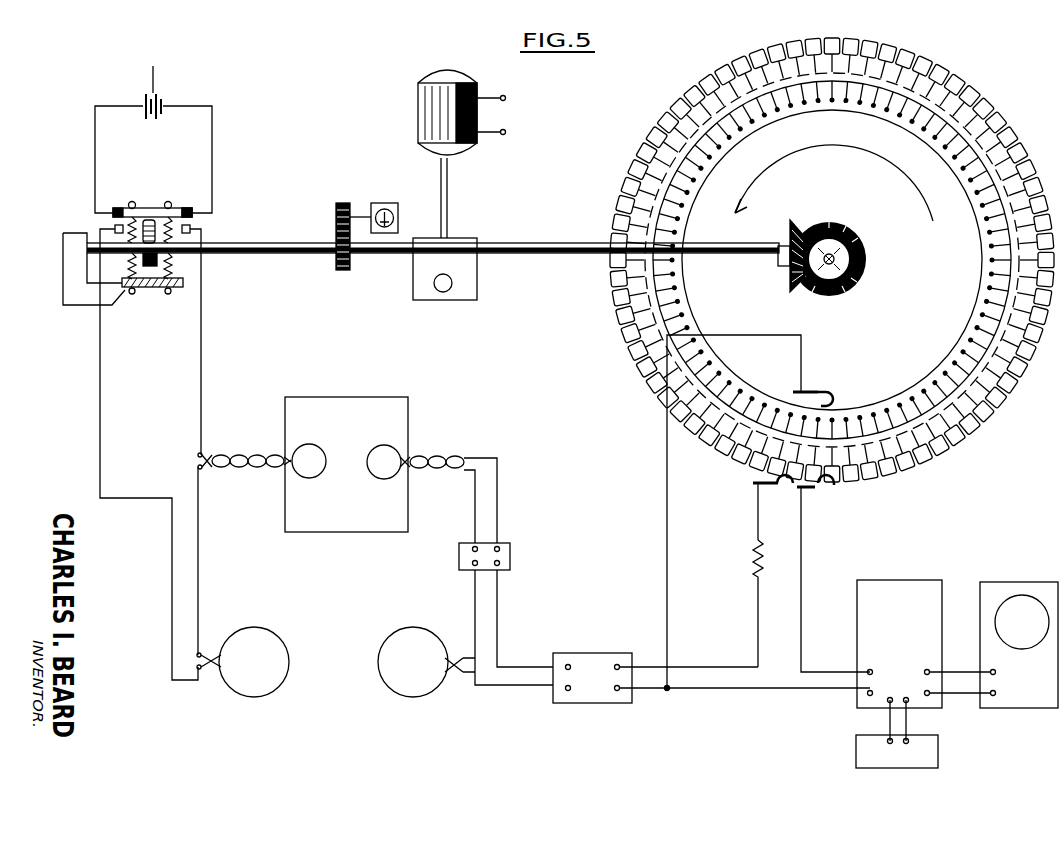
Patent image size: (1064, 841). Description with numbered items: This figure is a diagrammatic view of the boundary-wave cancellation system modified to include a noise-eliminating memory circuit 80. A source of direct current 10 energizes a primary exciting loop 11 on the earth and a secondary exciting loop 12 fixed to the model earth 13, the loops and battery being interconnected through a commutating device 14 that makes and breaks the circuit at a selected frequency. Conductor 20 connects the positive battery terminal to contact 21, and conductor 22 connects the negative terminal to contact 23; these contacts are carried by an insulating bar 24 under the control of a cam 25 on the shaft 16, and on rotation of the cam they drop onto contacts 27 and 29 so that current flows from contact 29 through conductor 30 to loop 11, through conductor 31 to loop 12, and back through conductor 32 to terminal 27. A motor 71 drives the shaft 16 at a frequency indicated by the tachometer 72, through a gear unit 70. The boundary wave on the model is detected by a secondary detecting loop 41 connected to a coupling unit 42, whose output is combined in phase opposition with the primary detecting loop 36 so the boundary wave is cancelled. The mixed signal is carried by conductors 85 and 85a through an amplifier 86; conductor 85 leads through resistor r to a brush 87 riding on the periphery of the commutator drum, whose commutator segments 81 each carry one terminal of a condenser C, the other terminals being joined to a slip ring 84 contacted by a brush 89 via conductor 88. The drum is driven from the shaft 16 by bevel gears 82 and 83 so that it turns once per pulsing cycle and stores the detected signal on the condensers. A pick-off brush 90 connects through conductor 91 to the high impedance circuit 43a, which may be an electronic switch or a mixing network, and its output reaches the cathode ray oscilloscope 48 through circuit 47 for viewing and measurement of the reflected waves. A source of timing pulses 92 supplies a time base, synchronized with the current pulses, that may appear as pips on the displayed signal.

The source of direct current 10 is at (147, 81).
The primary exciting loop 11 is at (273, 668).
The secondary exciting loop 12 is at (304, 476).
The model earth 13 is at (359, 422).
The commutating device 14 is at (32, 194).
The shaft 16 is at (381, 258).
The conductor 20 is at (213, 150).
The contact 21 is at (195, 214).
The conductor 22 is at (97, 152).
The contact 23 is at (113, 213).
The insulating bar 24 is at (147, 216).
The cam 25 is at (158, 258).
The contact 27 is at (191, 230).
The contact 29 is at (114, 229).
The conductor 30 is at (100, 374).
The conductor 31 is at (200, 545).
The conductor 32 is at (201, 345).
The primary detecting loop 36 is at (380, 673).
The secondary detecting loop 41 is at (380, 478).
The coupling unit 42 is at (505, 549).
The circuit 43a is at (898, 592).
The circuit 47 is at (950, 684).
The cathode ray oscilloscope 48 is at (1006, 587).
The gear box 70 is at (456, 246).
The motor 71 is at (426, 119).
The tachometer 72 is at (385, 206).
The memory circuit 80 is at (832, 270).
The commutator segments 81 is at (889, 470).
The bevel gear 82 is at (862, 270).
The bevel gear 83 is at (789, 268).
The slip ring 84 is at (946, 366).
The conductor 85 is at (517, 667).
The conductor 85a is at (494, 687).
The amplifier 86 is at (588, 665).
The brush 87 is at (773, 507).
The conductor 88 is at (667, 623).
The brush 89 is at (819, 392).
The pick-off brush 90 is at (816, 491).
The conductor 91 is at (801, 550).
The source of timing pulses 92 is at (940, 748).
The condenser C is at (878, 417).
The resistor r is at (752, 559).